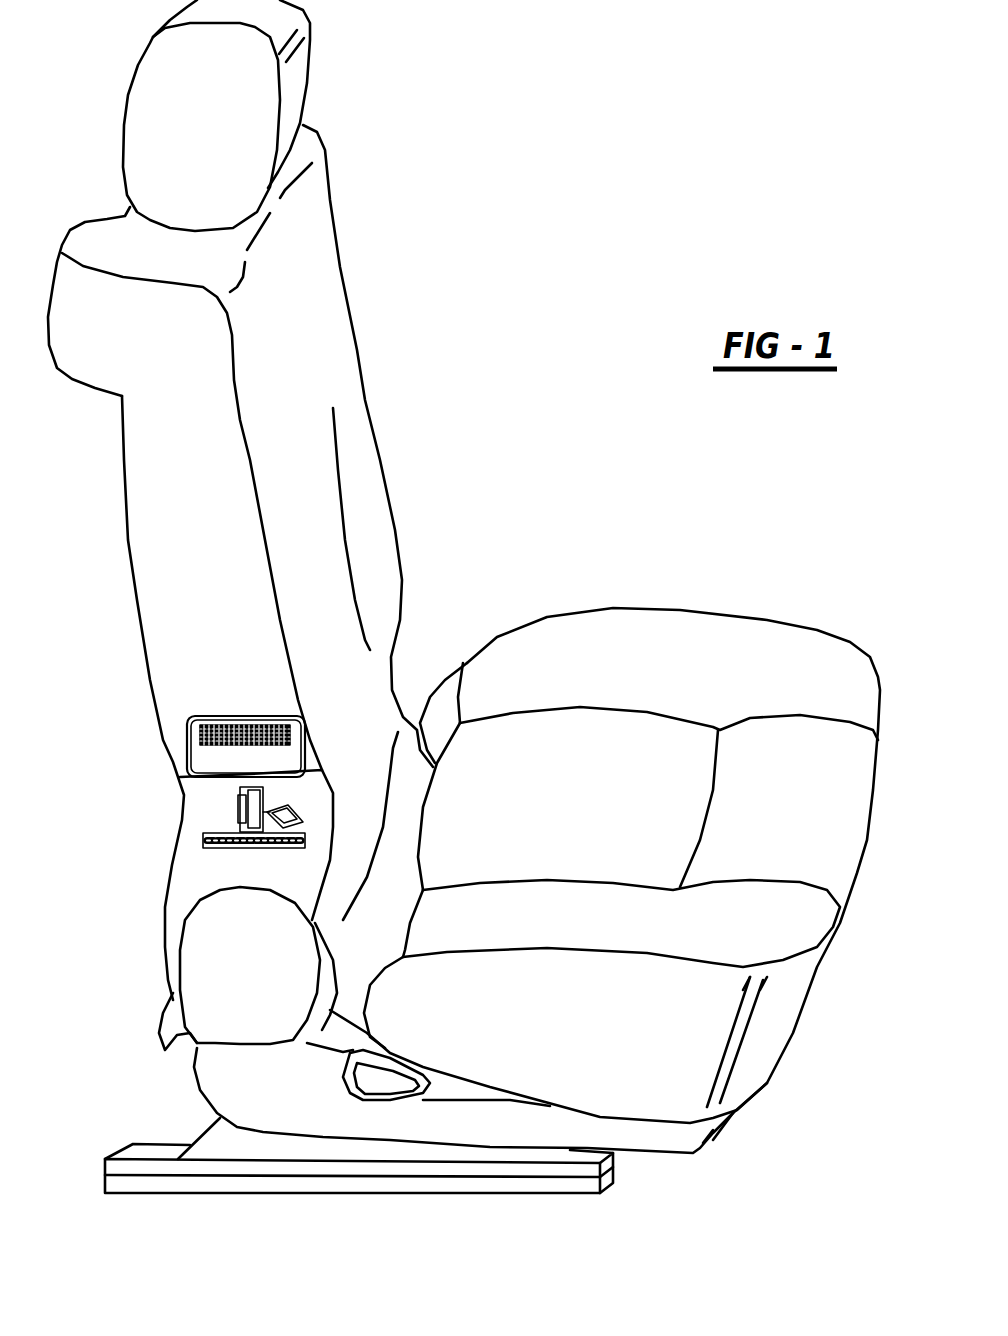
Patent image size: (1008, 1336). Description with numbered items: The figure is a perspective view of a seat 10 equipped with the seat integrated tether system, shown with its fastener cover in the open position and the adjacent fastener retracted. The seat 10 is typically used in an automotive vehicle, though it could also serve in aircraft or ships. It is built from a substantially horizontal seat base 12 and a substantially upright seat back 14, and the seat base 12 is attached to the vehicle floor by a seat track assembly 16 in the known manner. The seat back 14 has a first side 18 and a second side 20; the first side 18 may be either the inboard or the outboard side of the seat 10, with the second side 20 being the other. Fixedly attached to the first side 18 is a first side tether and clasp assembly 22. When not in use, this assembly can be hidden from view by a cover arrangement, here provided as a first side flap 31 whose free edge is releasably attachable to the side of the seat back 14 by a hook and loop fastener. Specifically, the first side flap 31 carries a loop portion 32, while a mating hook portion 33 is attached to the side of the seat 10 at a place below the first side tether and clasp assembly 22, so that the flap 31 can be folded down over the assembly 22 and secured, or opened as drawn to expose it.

The seat 10 is at (467, 350).
The seat base 12 is at (812, 825).
The seat back 14 is at (178, 588).
The seat track assembly 16 is at (158, 1177).
The first side 18 is at (175, 463).
The second side 20 is at (280, 313).
The first side tether and clasp assembly 22 is at (247, 820).
The first side flap 31 is at (187, 733).
The loop portion 32 is at (173, 770).
The hook portion 33 is at (220, 845).